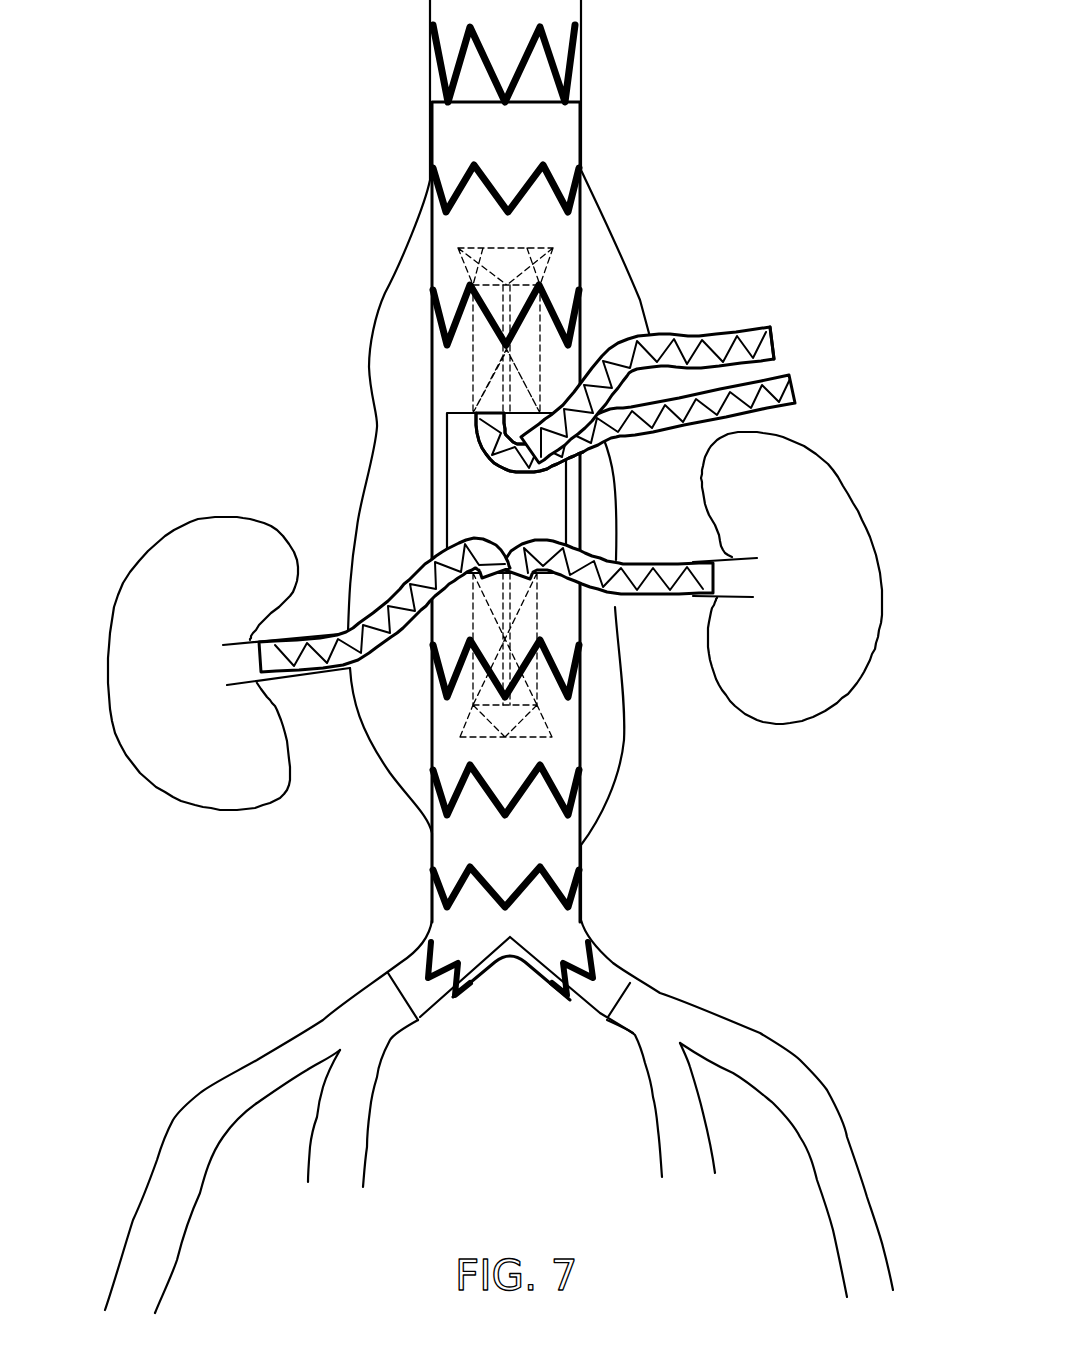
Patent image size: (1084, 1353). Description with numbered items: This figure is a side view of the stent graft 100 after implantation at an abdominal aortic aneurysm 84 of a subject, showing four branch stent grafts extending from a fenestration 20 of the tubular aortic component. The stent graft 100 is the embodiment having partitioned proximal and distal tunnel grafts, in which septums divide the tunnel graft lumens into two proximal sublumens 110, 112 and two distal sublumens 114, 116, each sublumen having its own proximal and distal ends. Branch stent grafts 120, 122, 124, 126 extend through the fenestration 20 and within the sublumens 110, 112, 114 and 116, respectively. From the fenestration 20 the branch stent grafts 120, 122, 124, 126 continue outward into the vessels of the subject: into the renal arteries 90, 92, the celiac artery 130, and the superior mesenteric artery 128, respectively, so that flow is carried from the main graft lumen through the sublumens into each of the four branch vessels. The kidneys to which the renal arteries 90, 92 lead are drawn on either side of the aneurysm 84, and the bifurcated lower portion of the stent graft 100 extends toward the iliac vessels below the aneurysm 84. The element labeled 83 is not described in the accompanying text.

The fenestration 20 is at (518, 524).
The bare suprarenal stent 83 is at (583, 64).
The abdominal aortic aneurysm 84 is at (622, 757).
The renal artery 90 is at (693, 560).
The renal artery 92 is at (300, 645).
The stent graft 100 is at (432, 400).
The proximal sublumen 110 is at (477, 368).
The proximal sublumen 112 is at (522, 372).
The distal sublumen 114 is at (487, 697).
The distal sublumen 116 is at (523, 618).
The branch stent graft 120 is at (485, 455).
The branch stent graft 122 is at (750, 345).
The branch stent graft 124 is at (377, 630).
The branch stent graft 126 is at (605, 574).
The superior mesenteric artery 128 is at (793, 380).
The celiac artery 130 is at (769, 326).